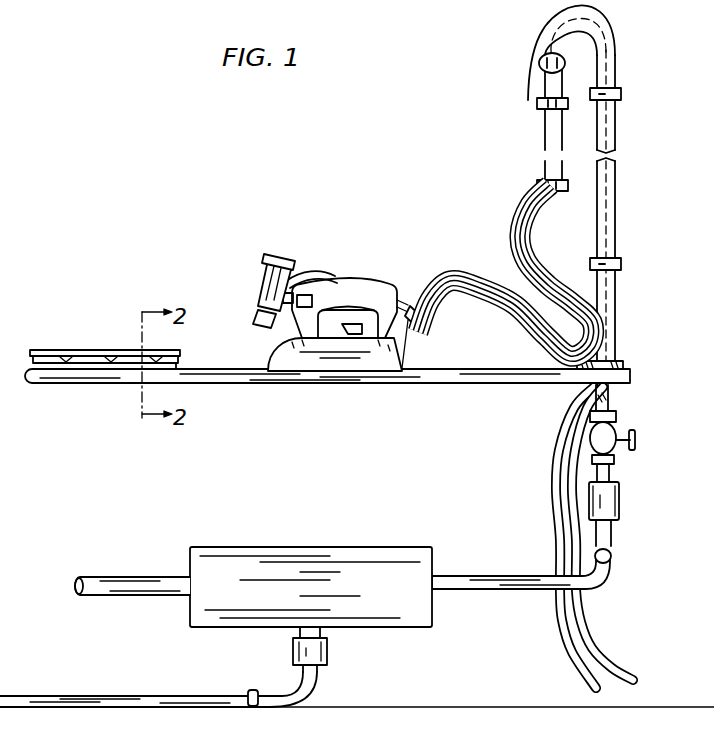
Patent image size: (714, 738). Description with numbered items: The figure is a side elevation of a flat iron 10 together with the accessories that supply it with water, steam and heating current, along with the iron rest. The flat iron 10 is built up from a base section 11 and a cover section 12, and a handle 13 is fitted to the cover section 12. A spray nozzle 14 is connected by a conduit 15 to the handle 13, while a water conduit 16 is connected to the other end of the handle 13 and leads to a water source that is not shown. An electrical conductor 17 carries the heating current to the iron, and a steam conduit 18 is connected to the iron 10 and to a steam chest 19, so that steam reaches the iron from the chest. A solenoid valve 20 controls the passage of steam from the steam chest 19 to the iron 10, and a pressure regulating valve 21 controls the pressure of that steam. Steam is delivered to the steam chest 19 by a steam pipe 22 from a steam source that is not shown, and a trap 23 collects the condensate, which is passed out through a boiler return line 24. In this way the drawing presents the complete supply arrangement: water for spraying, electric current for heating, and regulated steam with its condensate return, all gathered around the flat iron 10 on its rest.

The flat iron 10 is at (352, 264).
The base section 11 is at (280, 364).
The cover section 12 is at (282, 355).
The handle 13 is at (368, 292).
The spray nozzle 14 is at (266, 290).
The conduit 15 is at (292, 304).
The water conduit 16 is at (427, 285).
The electrical conductor 17 is at (452, 290).
The steam conduit 18 is at (448, 302).
The steam chest 19 is at (318, 548).
The solenoid valve 20 is at (611, 501).
The pressure regulating valve 21 is at (606, 437).
The steam pipe 22 is at (120, 585).
The trap 23 is at (330, 655).
The boiler return line 24 is at (146, 701).